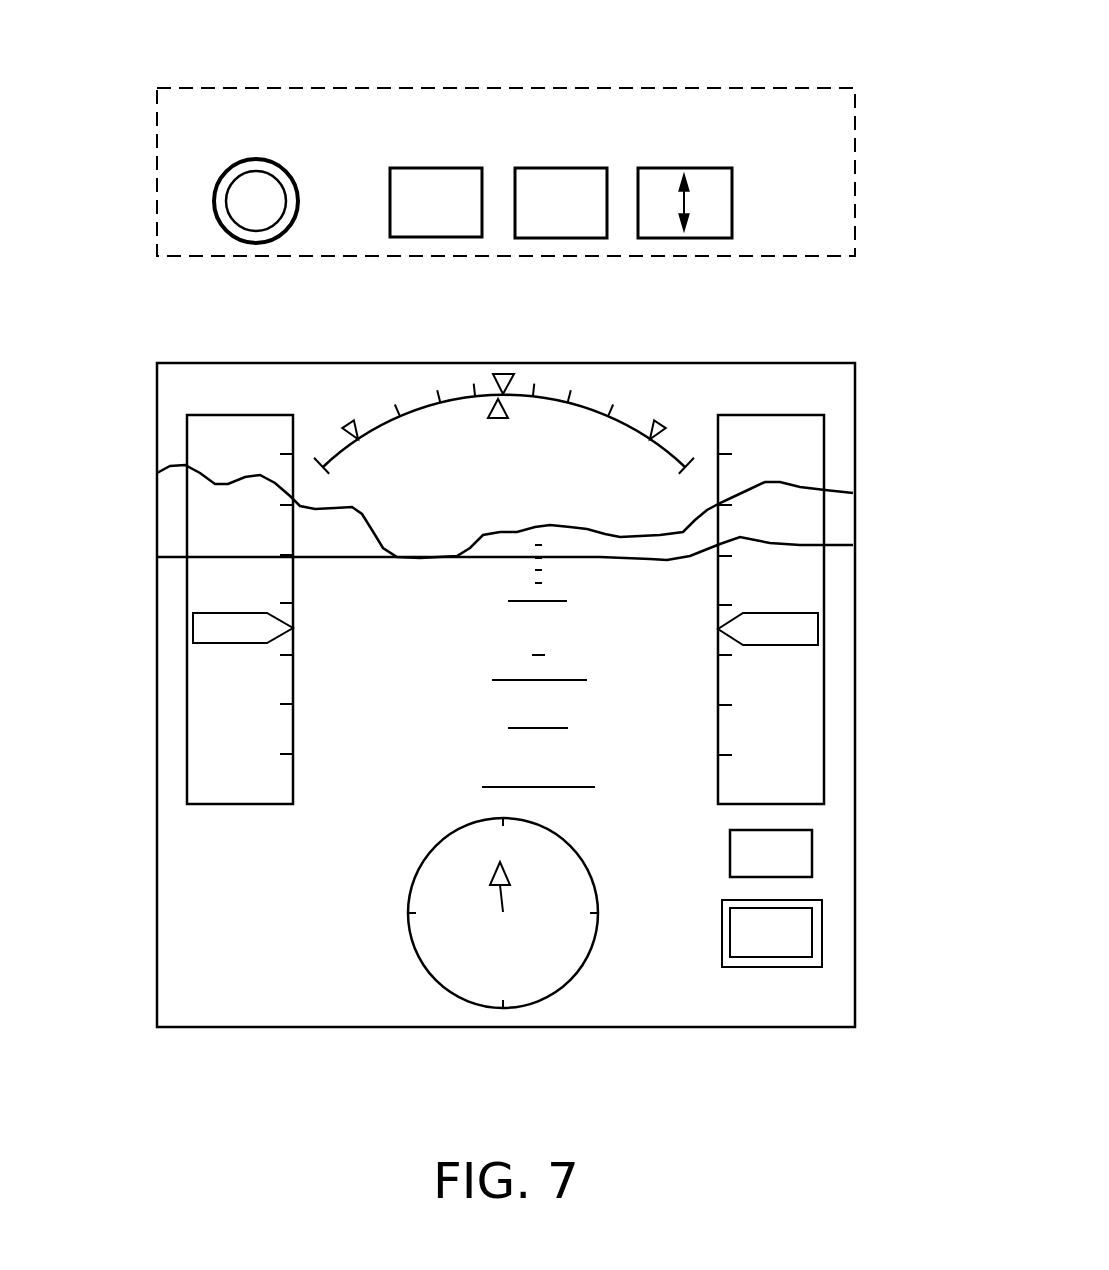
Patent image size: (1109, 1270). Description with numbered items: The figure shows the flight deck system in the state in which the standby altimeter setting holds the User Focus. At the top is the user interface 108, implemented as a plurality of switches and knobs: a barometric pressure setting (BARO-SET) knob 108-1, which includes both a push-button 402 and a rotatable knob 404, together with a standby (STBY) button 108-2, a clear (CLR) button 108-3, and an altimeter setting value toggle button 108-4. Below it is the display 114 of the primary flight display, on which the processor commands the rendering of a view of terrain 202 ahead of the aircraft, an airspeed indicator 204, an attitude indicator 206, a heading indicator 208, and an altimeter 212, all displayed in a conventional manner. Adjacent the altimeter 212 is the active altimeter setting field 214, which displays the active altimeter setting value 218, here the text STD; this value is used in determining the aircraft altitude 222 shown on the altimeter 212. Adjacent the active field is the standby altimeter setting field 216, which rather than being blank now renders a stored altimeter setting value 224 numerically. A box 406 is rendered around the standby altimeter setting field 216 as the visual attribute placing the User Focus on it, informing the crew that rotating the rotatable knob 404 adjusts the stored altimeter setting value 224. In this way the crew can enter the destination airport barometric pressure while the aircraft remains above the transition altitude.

The user interface 108 is at (820, 88).
The barometric pressure setting (BARO-SET) knob 108-1 is at (184, 217).
The standby (STBY) button 108-2 is at (413, 239).
The clear (CLR) button 108-3 is at (558, 240).
The altimeter setting value toggle button 108-4 is at (708, 240).
The push-button 402 is at (231, 198).
The rotatable knob 404 is at (216, 216).
The display 114 is at (818, 362).
The terrain view 202 is at (376, 518).
The airspeed indicator 204 is at (190, 505).
The attitude indicator 206 is at (595, 403).
The heading indicator 208 is at (414, 946).
The altimeter 212 is at (824, 432).
The active altimeter setting field 214 is at (791, 845).
The standby altimeter setting field 216 is at (790, 928).
The active altimeter setting value 218 is at (733, 852).
The aircraft altitude 222 is at (808, 627).
The stored altimeter setting value 224 is at (733, 930).
The box 406 is at (790, 940).